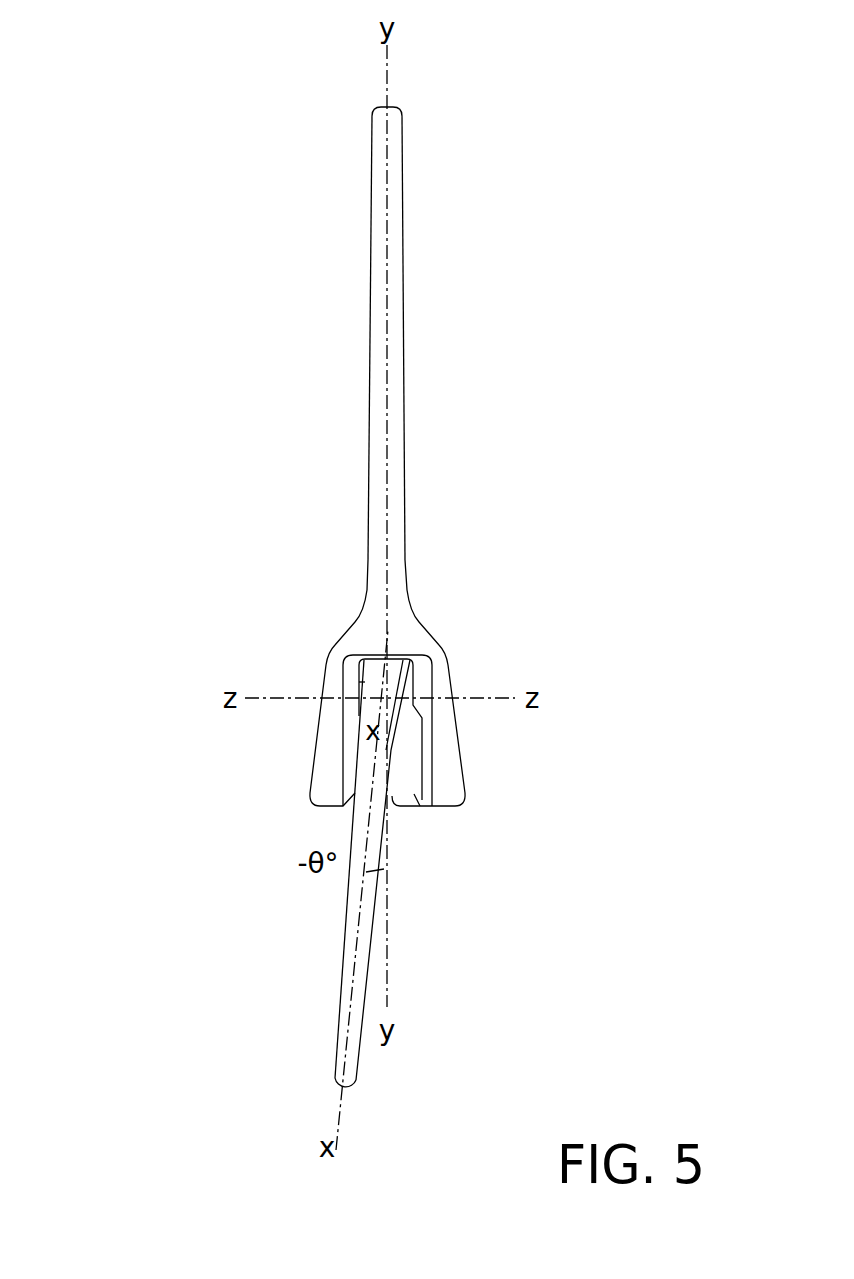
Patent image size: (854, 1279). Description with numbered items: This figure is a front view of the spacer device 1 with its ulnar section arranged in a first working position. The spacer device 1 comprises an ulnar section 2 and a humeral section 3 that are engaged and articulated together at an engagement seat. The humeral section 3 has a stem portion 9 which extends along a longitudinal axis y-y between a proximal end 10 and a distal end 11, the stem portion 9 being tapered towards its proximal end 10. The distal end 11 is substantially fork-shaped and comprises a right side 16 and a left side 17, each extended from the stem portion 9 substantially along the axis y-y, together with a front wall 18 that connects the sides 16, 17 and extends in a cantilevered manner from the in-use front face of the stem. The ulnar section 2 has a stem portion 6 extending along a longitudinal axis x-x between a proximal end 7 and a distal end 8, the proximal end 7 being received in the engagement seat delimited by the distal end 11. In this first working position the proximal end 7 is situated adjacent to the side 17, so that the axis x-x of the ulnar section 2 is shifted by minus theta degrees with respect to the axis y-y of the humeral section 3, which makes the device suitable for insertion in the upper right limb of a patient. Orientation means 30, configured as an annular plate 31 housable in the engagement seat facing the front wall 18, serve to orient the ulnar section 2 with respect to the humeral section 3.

The spacer device 1 is at (174, 354).
The ulnar section 2 is at (238, 984).
The humeral section 3 is at (243, 208).
The stem portion 6 is at (365, 912).
The proximal end 7 is at (349, 664).
The distal end 8 is at (350, 1083).
The stem portion 9 is at (392, 263).
The proximal end 10 is at (395, 120).
The distal end 11 is at (467, 636).
The side 16 is at (442, 765).
The side 17 is at (328, 765).
The front wall 18 is at (381, 633).
The orientation means 30 is at (412, 835).
The annular plate 31 is at (413, 795).